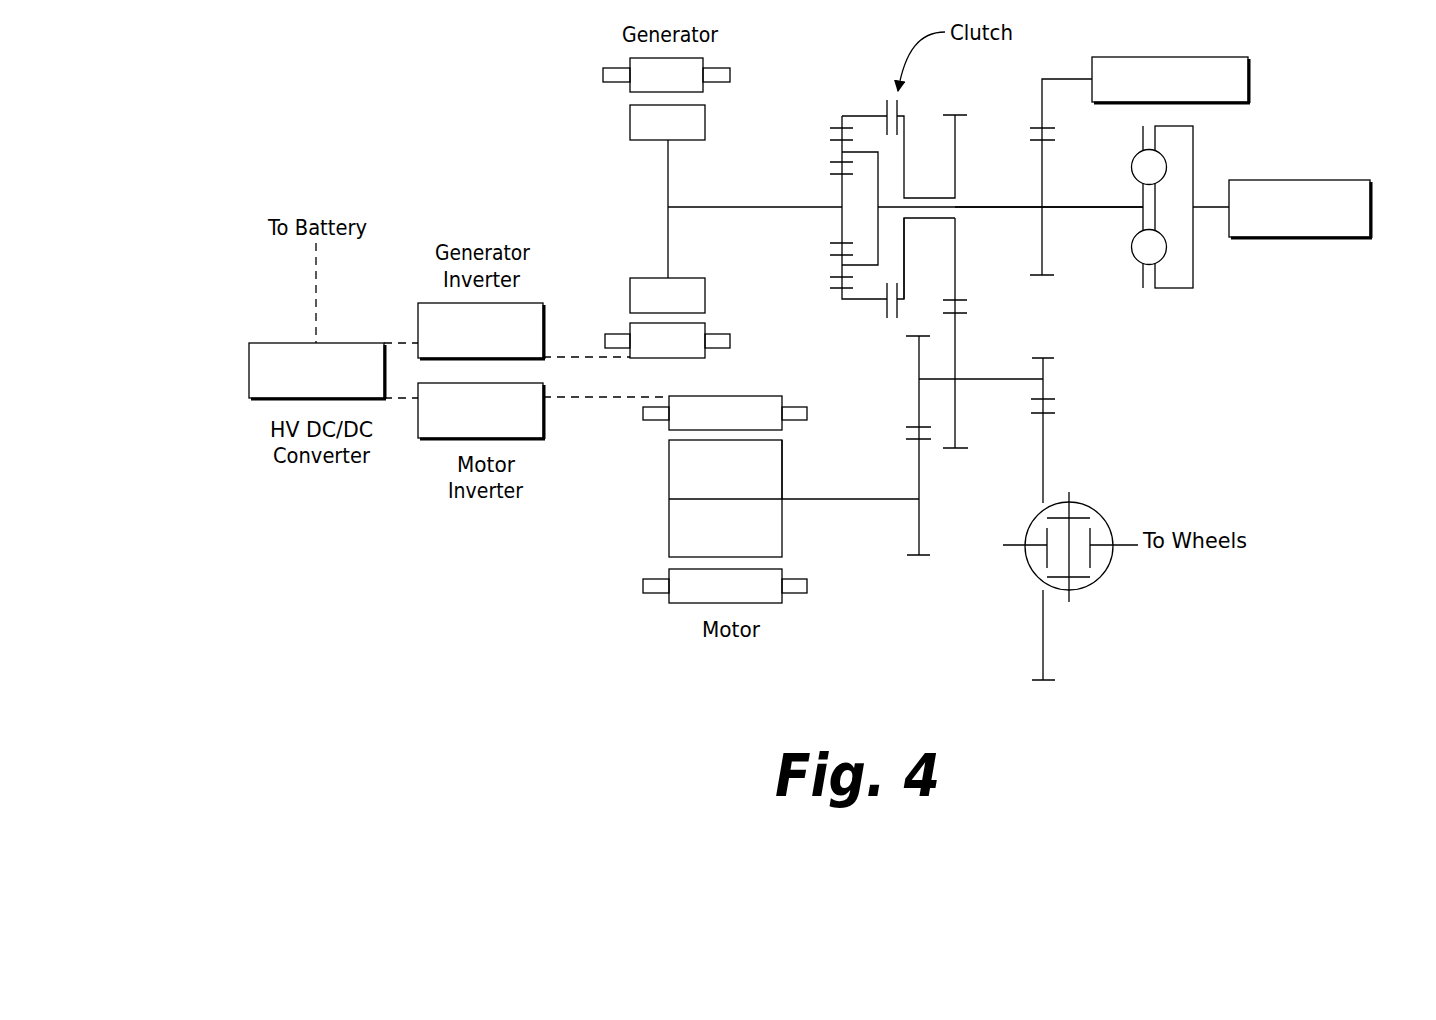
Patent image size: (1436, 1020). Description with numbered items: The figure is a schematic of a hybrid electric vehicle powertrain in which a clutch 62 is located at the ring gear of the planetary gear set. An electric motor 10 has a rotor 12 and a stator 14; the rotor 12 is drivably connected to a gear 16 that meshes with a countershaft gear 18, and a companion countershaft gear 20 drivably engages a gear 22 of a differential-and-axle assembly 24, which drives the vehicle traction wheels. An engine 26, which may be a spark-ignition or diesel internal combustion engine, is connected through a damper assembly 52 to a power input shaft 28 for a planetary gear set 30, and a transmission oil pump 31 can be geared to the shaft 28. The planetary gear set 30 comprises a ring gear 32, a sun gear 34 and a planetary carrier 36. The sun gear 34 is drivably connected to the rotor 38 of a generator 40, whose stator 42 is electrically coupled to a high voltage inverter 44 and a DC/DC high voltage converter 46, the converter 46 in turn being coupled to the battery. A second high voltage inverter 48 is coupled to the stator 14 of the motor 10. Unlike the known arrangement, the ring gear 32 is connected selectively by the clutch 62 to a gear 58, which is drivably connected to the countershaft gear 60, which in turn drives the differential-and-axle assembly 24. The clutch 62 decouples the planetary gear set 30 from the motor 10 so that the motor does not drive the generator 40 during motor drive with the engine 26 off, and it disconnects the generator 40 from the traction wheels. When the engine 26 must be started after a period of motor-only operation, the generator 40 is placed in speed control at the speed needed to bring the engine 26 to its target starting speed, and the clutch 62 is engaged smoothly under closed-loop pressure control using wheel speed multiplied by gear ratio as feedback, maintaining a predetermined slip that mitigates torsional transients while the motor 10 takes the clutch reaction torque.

The electric motor 10 is at (665, 473).
The rotor 12 is at (782, 471).
The stator 14 is at (725, 396).
The gear 16 is at (919, 523).
The countershaft gear 18 is at (919, 370).
The companion countershaft gear 20 is at (1043, 369).
The gear 22 is at (1043, 633).
The differential-and-axle assembly 24 is at (1100, 512).
The engine 26 is at (1300, 180).
The power input shaft 28 is at (1059, 207).
The planetary gear set 30 is at (864, 109).
The transmission oil pump 31 is at (1172, 57).
The ring gear 32 is at (836, 128).
The sun gear 34 is at (842, 223).
The planetary carrier 36 is at (878, 240).
The rotor 38 is at (630, 123).
The generator 40 is at (630, 63).
The stator 42 is at (630, 332).
The high voltage inverter 44 is at (435, 303).
The DC/DC high voltage converter 46 is at (249, 374).
The high voltage inverter 48 is at (543, 412).
The damper assembly 52 is at (1193, 162).
The gear 58 is at (955, 168).
The countershaft gear 60 is at (957, 348).
The clutch 62 is at (883, 91).